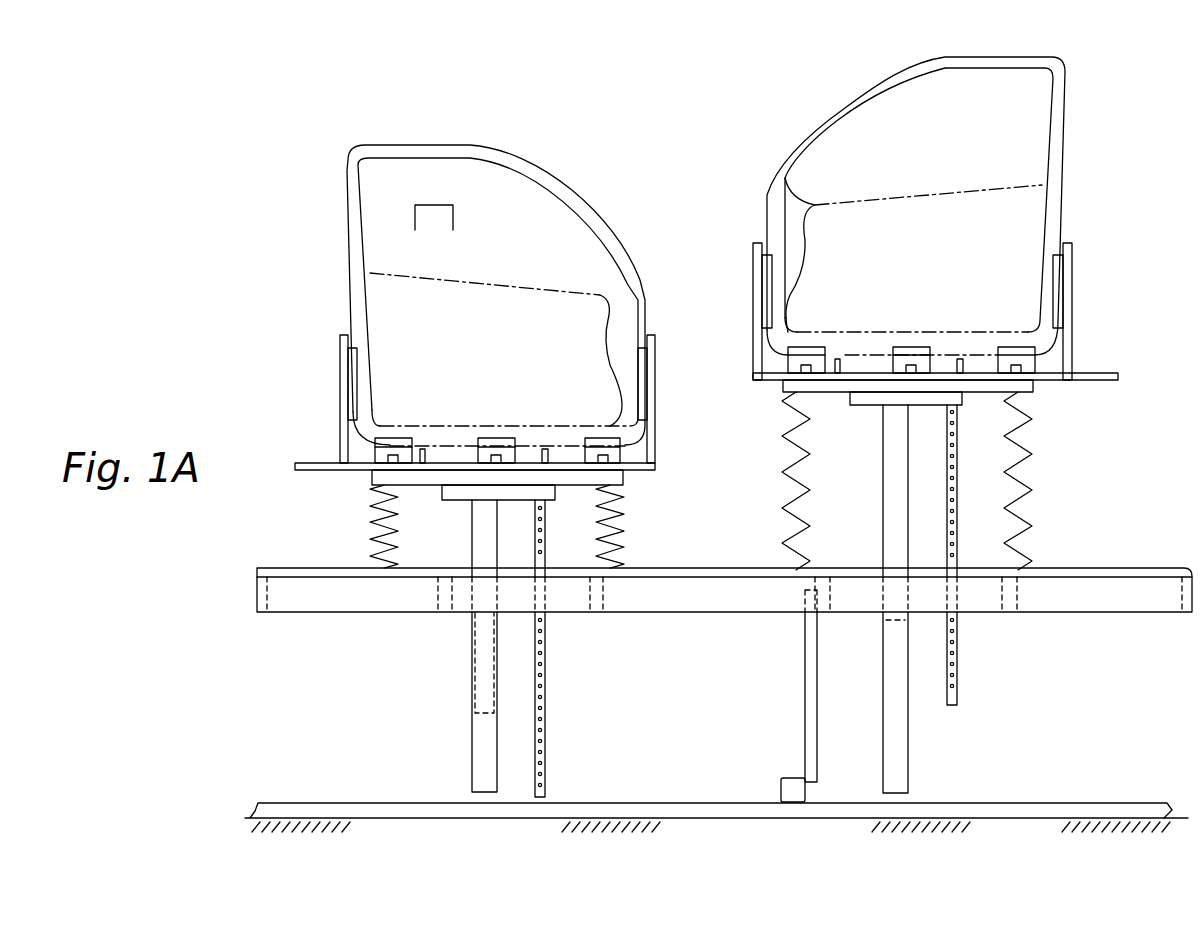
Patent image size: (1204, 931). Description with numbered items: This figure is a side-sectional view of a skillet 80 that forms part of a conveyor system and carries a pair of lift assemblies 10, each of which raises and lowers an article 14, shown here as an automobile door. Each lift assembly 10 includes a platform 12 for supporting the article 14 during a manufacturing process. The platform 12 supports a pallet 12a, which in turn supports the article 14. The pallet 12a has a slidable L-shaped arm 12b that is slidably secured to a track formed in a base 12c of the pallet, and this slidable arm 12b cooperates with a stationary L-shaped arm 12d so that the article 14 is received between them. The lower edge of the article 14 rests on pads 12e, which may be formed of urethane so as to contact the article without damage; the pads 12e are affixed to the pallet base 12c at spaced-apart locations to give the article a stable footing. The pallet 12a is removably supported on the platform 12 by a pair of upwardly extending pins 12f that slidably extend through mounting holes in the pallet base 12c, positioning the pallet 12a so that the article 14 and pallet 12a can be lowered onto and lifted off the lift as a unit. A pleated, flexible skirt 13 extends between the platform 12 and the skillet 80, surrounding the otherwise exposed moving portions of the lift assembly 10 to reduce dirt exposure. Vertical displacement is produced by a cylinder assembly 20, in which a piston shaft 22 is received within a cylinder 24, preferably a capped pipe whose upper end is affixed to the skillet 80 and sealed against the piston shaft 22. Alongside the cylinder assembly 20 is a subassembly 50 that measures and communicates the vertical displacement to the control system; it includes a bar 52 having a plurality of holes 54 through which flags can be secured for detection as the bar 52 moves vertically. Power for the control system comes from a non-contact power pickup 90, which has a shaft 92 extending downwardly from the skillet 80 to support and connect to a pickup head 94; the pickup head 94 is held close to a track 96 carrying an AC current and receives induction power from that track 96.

The lift assembly 10 is at (604, 191).
The platform 12 is at (390, 475).
The pallet 12a is at (677, 356).
The slidable L-shaped arm 12b is at (346, 363).
The pallet base 12c is at (316, 463).
The stationary L-shaped arm 12d is at (660, 400).
The pads 12e is at (597, 437).
The upwardly extending pins 12f is at (425, 455).
The pleated flexible skirt 13 is at (617, 528).
The article 14 is at (355, 205).
The cylinder assembly 20 is at (623, 599).
The piston shaft 22 is at (479, 526).
The cylinder 24 is at (470, 655).
The subassembly 50 is at (821, 601).
The bar 52 is at (548, 754).
The holes 54 is at (548, 662).
The skillet 80 is at (1117, 572).
The non-contact power pickup 90 is at (755, 696).
The shaft 92 is at (808, 700).
The pickup head 94 is at (785, 788).
The track 96 is at (993, 806).